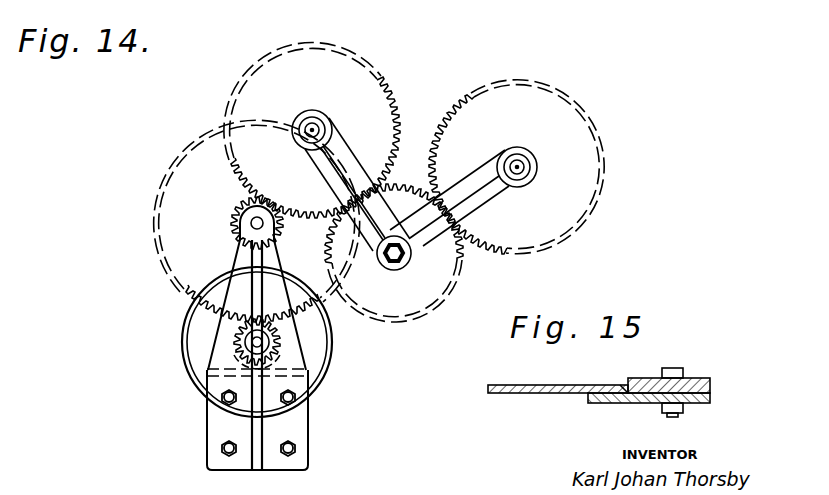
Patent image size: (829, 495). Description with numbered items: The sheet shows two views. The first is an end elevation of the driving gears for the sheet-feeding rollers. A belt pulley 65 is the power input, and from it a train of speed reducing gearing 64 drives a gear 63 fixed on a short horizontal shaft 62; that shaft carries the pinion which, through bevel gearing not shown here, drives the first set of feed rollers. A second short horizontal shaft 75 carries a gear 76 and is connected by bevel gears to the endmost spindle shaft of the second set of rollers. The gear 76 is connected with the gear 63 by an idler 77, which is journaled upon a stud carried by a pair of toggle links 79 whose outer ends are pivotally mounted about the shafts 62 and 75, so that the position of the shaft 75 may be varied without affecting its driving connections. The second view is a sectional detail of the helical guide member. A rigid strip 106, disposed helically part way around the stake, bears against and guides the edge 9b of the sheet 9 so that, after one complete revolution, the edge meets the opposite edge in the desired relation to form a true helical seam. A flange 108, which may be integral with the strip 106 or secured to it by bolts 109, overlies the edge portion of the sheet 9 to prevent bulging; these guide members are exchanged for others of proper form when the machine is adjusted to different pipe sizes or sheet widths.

In FIG. 14, the short horizontal shaft 62 is at (314, 126).
In FIG. 14, the gear 63 is at (379, 86).
In FIG. 14, the train of speed reducing gearing 64 is at (240, 229).
In FIG. 14, the belt pulley 65 is at (196, 372).
In FIG. 14, the short horizontal shaft 75 is at (517, 164).
In FIG. 14, the gear 76 is at (470, 96).
In FIG. 14, the idler 77 is at (457, 262).
In FIG. 14, the toggle links 79 is at (352, 160).
In FIG. 15, the sheet 9 is at (498, 386).
In FIG. 15, the edge of sheet 9b is at (624, 385).
In FIG. 15, the rigid strip 106 is at (700, 380).
In FIG. 15, the flange 108 is at (698, 398).
In FIG. 15, the bolts 109 is at (674, 372).